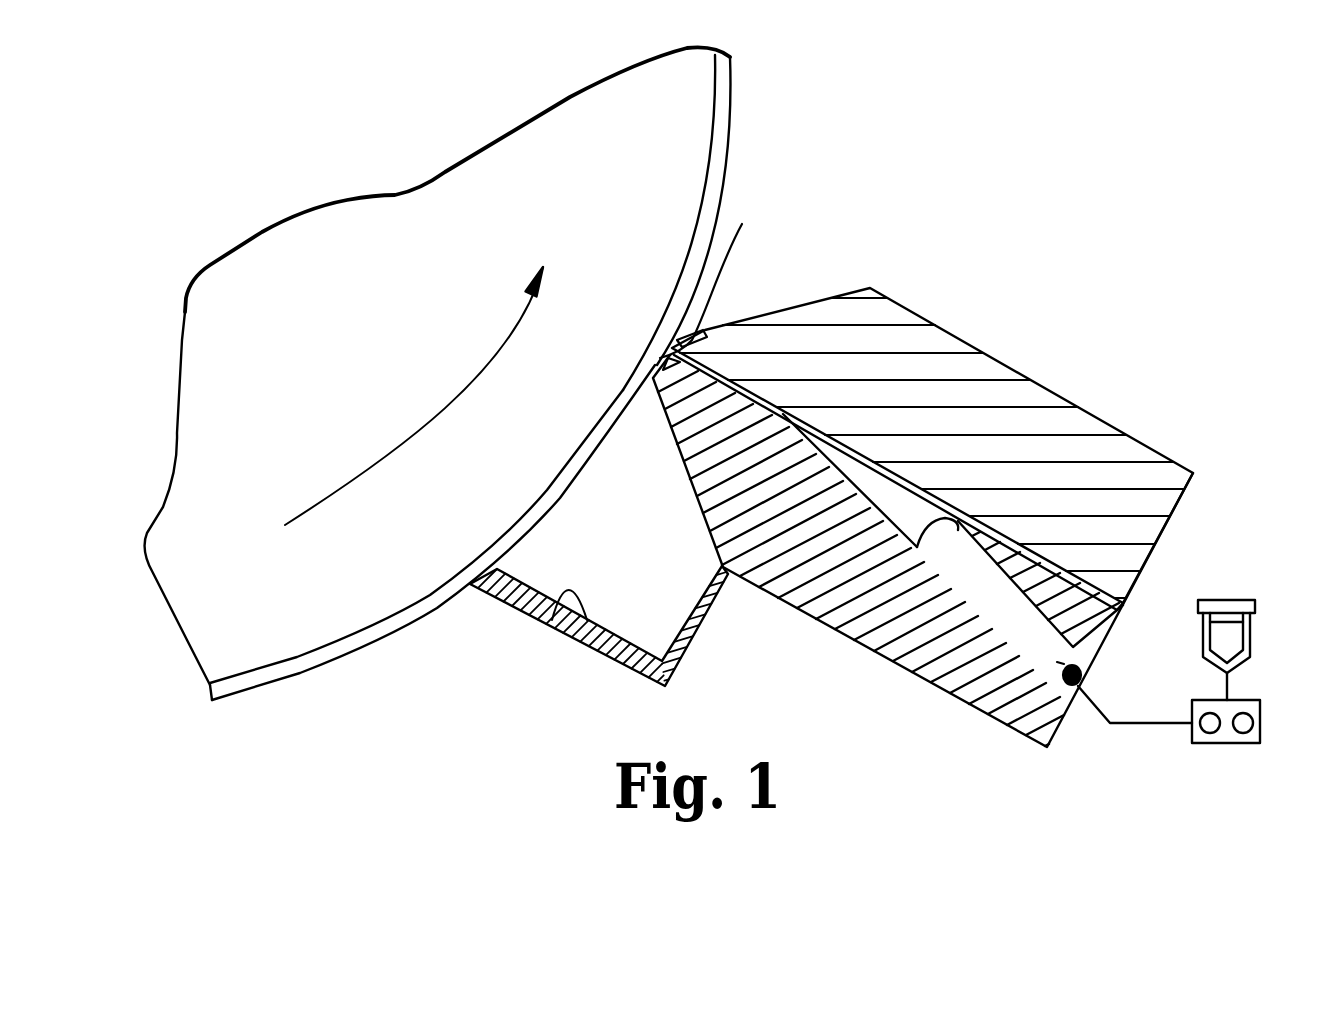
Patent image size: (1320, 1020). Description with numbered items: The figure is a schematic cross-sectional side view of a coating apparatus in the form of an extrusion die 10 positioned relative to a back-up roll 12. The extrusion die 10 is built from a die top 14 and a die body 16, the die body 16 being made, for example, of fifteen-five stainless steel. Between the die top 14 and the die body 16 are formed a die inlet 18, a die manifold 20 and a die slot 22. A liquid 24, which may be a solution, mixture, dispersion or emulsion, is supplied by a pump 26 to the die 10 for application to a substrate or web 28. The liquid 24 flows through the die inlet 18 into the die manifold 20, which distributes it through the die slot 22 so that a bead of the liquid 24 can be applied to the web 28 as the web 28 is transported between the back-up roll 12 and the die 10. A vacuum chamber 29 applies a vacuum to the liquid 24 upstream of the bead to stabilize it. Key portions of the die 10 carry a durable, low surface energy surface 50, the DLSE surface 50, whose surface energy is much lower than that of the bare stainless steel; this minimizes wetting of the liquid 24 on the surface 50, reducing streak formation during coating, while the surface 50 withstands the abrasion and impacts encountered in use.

The extrusion die 10 is at (985, 290).
The back-up roll 12 is at (298, 640).
The die top 14 is at (977, 370).
The die body 16 is at (893, 650).
The die inlet 18 is at (1003, 648).
The die manifold 20 is at (893, 512).
The die slot 22 is at (710, 347).
The liquid 24 is at (1228, 641).
The pump 26 is at (1225, 737).
The web 28 is at (729, 116).
The vacuum chamber 29 is at (557, 597).
The durable, low surface energy surface 50 is at (741, 227).